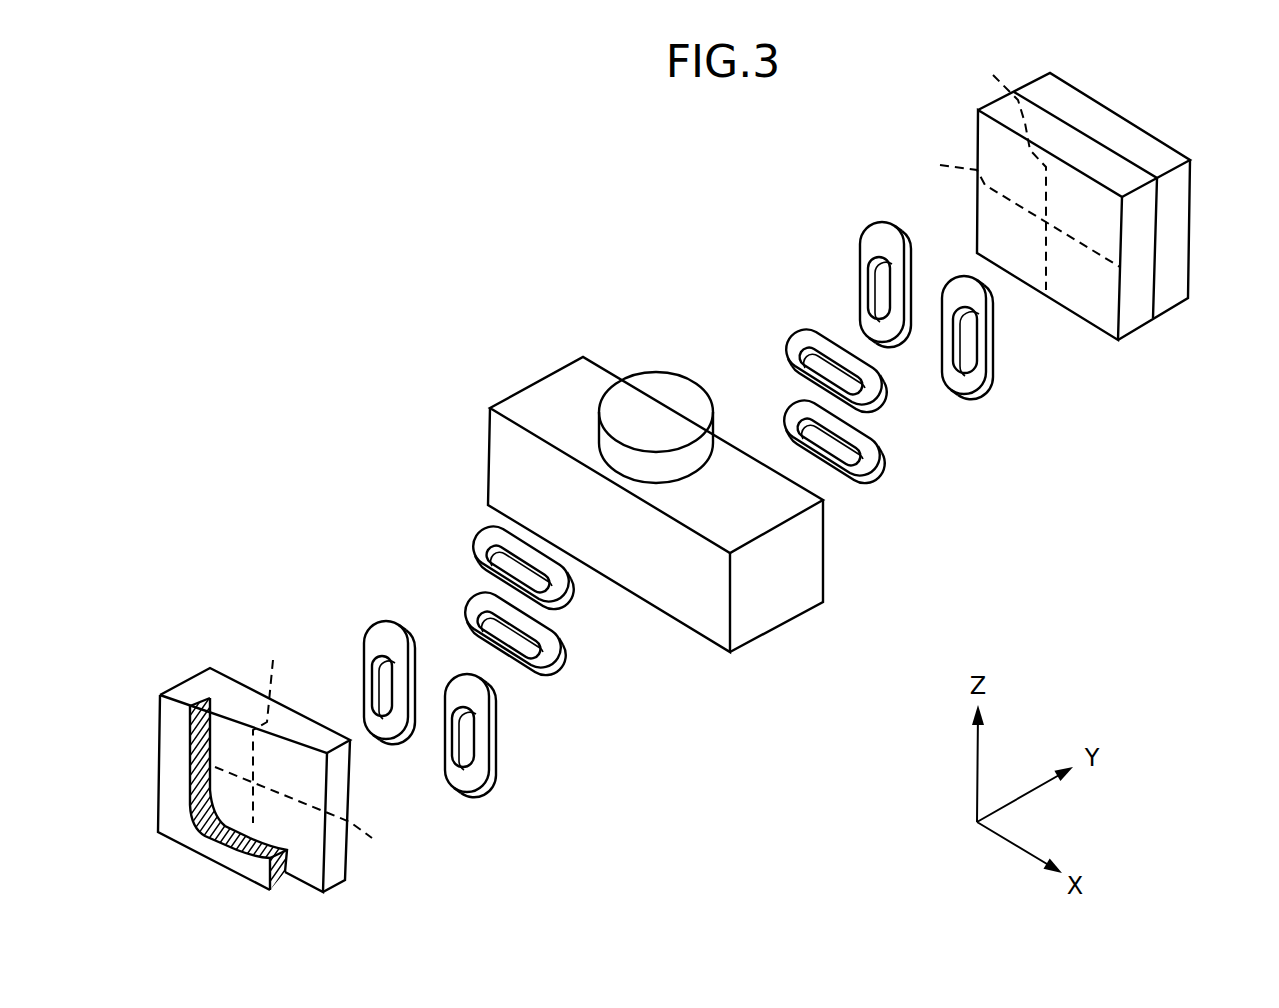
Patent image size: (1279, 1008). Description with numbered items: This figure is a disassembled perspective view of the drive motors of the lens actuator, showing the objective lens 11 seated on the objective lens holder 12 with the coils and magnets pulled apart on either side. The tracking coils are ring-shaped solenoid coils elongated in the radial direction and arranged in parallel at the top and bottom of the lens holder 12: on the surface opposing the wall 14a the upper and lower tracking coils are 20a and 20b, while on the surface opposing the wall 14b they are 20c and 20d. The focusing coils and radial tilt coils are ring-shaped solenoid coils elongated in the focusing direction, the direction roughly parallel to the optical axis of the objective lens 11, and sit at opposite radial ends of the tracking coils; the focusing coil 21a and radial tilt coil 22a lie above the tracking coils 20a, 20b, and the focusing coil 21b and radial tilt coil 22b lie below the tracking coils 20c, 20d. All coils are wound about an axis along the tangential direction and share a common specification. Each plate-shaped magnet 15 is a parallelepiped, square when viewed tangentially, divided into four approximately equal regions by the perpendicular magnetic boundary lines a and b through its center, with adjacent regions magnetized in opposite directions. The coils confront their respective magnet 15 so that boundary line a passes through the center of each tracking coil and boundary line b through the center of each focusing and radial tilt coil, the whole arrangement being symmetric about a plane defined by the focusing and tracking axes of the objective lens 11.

The objective lens 11 is at (612, 405).
The objective lens holder 12 is at (783, 597).
The wall 14a is at (167, 805).
The wall 14b is at (1180, 197).
The plate-shaped magnet 15 is at (1133, 315).
The tracking coil 20a is at (482, 548).
The tracking coil 20b is at (540, 667).
The tracking coil 20c is at (795, 348).
The tracking coil 20d is at (867, 470).
The focusing coil 21a is at (375, 640).
The focusing coil 21b is at (977, 377).
The radial tilt coil 22a is at (473, 778).
The radial tilt coil 22b is at (870, 247).